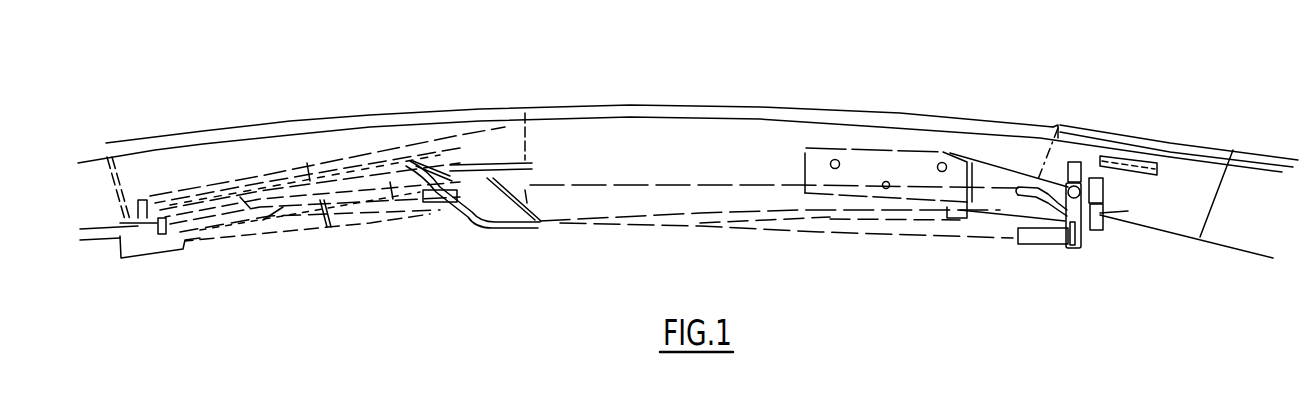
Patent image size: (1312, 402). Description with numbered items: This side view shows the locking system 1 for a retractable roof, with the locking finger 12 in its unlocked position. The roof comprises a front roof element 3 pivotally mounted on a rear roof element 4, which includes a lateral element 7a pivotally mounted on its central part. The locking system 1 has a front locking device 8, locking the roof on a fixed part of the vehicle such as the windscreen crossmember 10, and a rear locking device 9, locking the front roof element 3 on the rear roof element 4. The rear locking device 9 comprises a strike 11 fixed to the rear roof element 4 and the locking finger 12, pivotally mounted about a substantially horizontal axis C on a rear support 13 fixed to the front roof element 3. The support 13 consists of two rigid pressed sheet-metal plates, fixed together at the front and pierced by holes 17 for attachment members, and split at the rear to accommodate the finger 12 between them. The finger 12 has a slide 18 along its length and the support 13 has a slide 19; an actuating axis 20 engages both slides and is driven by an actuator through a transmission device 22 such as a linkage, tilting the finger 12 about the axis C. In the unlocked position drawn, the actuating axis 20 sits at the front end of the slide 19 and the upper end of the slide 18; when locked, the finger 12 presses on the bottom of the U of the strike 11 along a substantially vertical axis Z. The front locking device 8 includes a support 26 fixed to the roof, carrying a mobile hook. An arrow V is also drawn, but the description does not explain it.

The locking system 1 is at (685, 87).
The front roof element 3 is at (787, 108).
The rear roof element 4 is at (1163, 140).
The lateral element 7a is at (1197, 210).
The front locking device 8 is at (237, 116).
The rear locking device 9 is at (1011, 106).
The windscreen crossmember 10 is at (96, 175).
The strike 11 is at (1097, 158).
The locking finger 12 is at (1083, 237).
The rear support 13 is at (910, 170).
The holes 17 is at (939, 163).
The slide 18 is at (1073, 248).
The slide 19 is at (1033, 198).
The actuating axis 20 is at (1128, 211).
The transmission device 22 is at (535, 222).
The support 26 is at (477, 164).
The axis C is at (1076, 186).
The axis Z is at (1114, 112).
The direction of movement V is at (1105, 172).